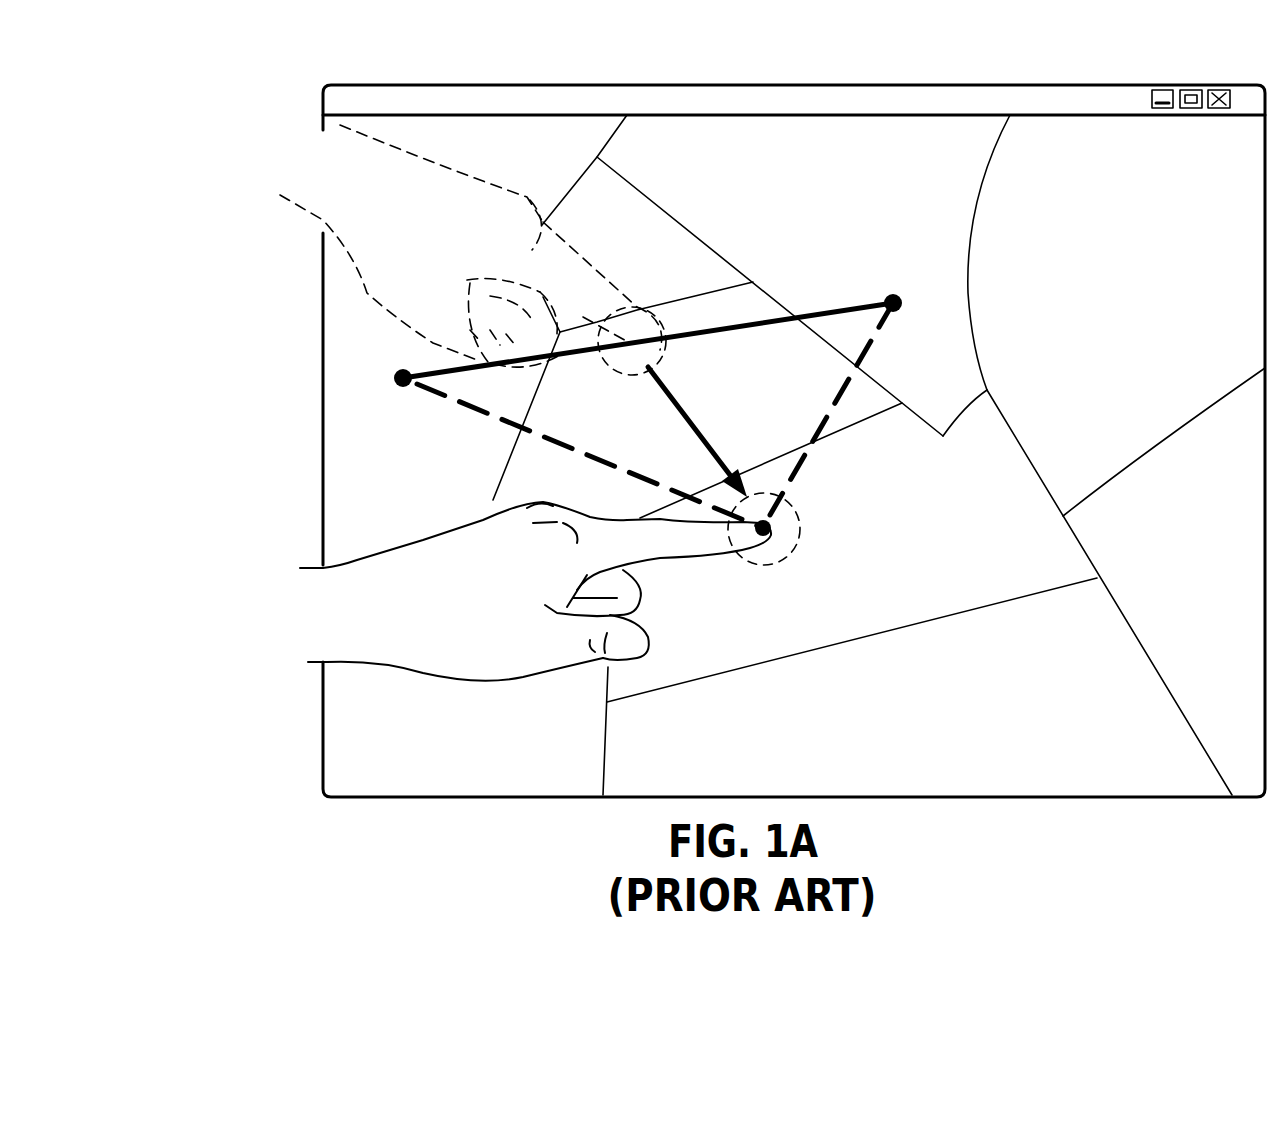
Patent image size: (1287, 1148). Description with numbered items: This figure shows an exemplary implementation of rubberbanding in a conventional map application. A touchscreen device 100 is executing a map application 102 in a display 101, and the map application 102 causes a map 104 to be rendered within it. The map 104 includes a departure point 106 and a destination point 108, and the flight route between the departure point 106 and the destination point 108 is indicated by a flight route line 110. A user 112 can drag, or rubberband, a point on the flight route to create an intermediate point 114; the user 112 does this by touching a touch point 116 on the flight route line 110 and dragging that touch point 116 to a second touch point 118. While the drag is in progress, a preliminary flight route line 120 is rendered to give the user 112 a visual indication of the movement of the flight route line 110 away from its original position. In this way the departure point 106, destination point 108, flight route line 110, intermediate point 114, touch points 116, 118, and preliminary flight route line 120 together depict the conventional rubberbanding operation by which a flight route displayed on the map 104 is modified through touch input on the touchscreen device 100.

The touchscreen device 100 is at (292, 90).
The display 101 is at (336, 733).
The map application 102 is at (896, 112).
The map 104 is at (1179, 187).
The departure point 106 is at (393, 378).
The destination point 108 is at (888, 294).
The flight route line 110 is at (570, 363).
The user 112 is at (323, 204).
The intermediate point 114 is at (790, 510).
The touch point 116 is at (663, 360).
The touch point 118 is at (750, 565).
The preliminary flight route line 120 is at (587, 457).